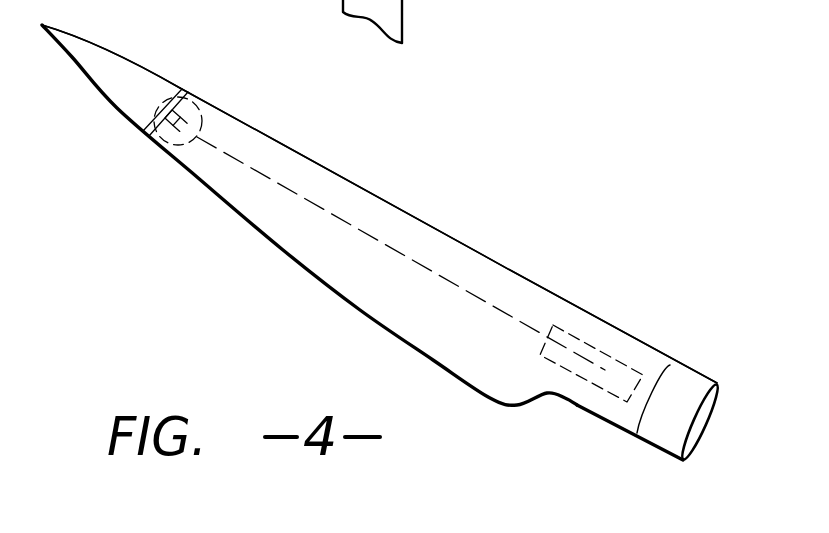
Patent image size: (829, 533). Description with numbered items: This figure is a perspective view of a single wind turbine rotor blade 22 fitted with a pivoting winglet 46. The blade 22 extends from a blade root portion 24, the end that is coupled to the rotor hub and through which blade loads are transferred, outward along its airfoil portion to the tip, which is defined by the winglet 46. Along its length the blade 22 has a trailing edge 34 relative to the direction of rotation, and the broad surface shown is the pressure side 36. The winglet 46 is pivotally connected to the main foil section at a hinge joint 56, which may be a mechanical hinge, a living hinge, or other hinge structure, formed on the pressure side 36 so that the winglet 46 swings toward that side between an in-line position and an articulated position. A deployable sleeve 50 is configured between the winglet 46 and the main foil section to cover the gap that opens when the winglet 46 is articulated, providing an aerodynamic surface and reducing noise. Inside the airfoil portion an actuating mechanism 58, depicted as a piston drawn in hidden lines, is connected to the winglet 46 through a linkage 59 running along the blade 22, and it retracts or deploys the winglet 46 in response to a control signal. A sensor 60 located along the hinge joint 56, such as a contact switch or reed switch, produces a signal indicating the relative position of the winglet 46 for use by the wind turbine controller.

The rotor blade 22 is at (597, 183).
The blade root portion 24 is at (660, 427).
The trailing edge 34 is at (283, 251).
The pressure side 36 is at (313, 177).
The winglet 46 is at (102, 63).
The deployable sleeve 50 is at (183, 145).
The hinge joint 56 is at (160, 112).
The actuating mechanism 58 is at (583, 360).
The linkage 59 is at (385, 240).
The sensor 60 is at (200, 102).